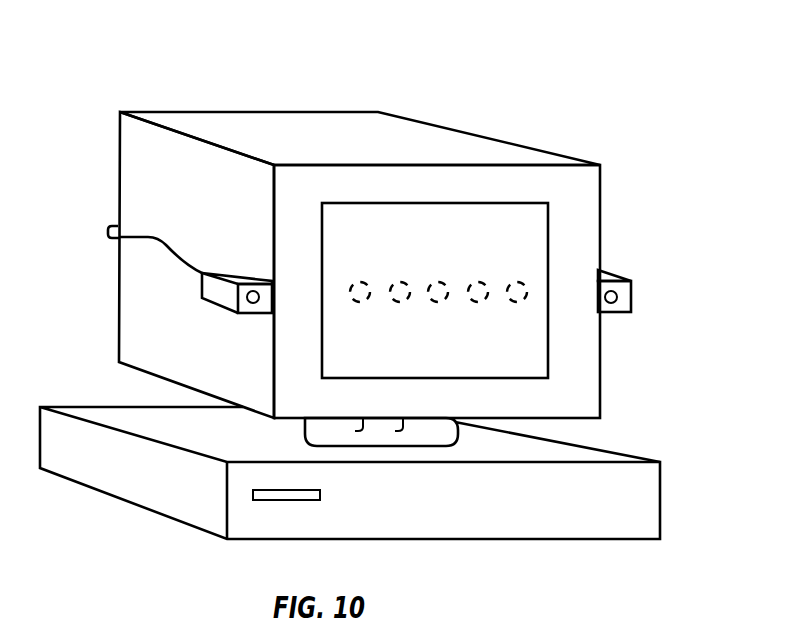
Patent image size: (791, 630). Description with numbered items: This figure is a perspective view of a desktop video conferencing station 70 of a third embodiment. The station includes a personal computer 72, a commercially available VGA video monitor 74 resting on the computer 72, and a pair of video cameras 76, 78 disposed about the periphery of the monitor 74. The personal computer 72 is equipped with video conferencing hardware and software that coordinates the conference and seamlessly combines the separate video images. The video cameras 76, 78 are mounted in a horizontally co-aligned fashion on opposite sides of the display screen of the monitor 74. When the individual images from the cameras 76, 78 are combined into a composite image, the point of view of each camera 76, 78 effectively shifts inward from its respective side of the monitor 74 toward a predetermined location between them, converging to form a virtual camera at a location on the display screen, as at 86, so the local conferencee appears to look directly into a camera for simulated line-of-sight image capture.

The image capture system 70 is at (631, 76).
The personal computer 72 is at (623, 462).
The video monitor 74 is at (530, 153).
The video camera 76 is at (252, 279).
The video camera 78 is at (617, 278).
The virtual camera 86 is at (499, 271).